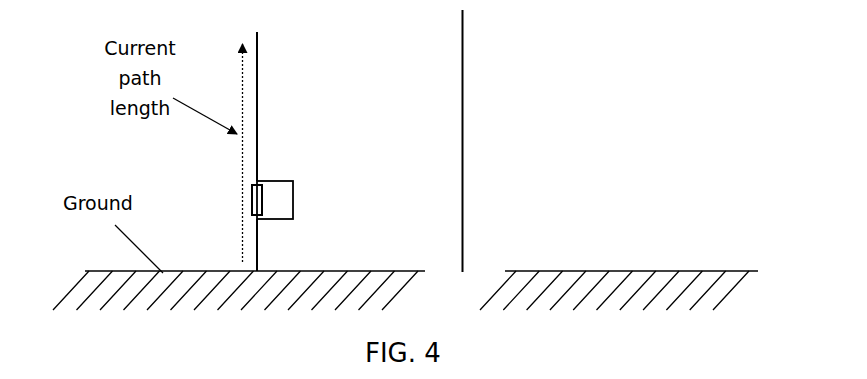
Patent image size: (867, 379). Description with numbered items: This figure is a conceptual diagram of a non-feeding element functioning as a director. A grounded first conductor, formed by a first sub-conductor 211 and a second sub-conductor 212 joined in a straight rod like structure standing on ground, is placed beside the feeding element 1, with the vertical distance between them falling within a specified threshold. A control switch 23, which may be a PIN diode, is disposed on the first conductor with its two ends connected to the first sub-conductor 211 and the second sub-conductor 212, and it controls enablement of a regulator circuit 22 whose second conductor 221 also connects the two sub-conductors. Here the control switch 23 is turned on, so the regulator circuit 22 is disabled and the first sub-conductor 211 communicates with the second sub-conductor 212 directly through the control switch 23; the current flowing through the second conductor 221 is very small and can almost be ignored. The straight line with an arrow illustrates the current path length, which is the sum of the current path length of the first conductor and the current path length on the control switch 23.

The feeding element 1 is at (462, 126).
The regulator circuit 22 is at (331, 150).
The first sub-conductor 211 is at (260, 70).
The second sub-conductor 212 is at (260, 255).
The second conductor 221 is at (293, 202).
The control switch 23 is at (254, 200).